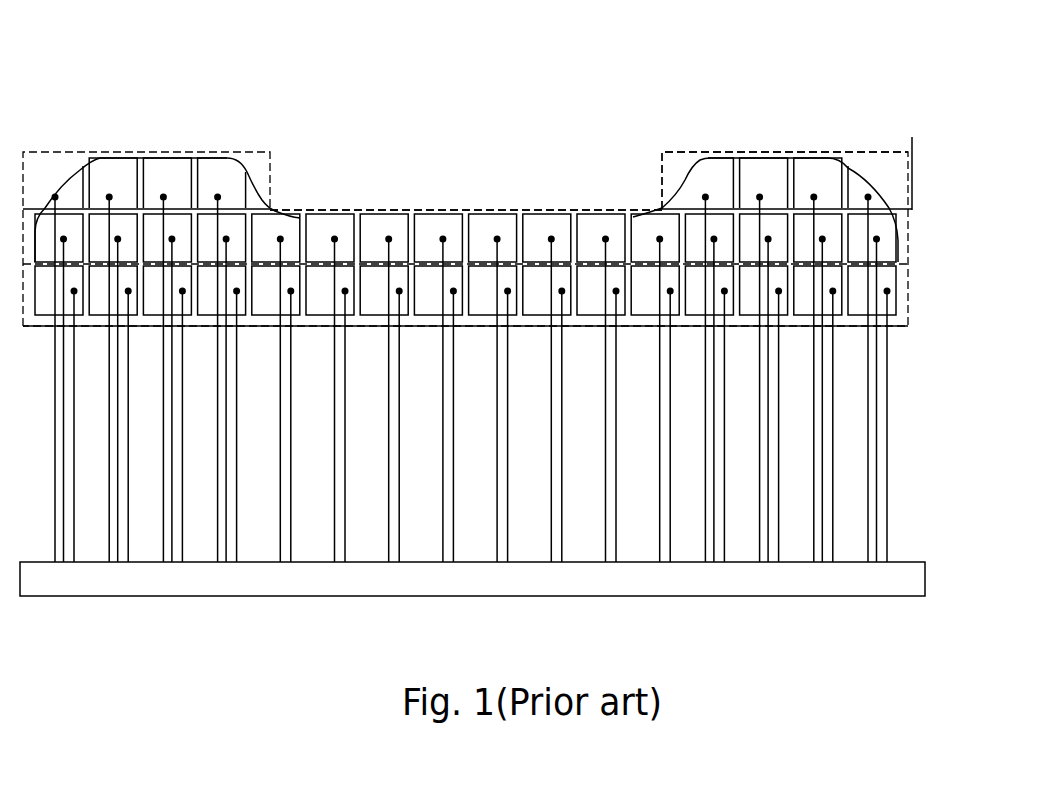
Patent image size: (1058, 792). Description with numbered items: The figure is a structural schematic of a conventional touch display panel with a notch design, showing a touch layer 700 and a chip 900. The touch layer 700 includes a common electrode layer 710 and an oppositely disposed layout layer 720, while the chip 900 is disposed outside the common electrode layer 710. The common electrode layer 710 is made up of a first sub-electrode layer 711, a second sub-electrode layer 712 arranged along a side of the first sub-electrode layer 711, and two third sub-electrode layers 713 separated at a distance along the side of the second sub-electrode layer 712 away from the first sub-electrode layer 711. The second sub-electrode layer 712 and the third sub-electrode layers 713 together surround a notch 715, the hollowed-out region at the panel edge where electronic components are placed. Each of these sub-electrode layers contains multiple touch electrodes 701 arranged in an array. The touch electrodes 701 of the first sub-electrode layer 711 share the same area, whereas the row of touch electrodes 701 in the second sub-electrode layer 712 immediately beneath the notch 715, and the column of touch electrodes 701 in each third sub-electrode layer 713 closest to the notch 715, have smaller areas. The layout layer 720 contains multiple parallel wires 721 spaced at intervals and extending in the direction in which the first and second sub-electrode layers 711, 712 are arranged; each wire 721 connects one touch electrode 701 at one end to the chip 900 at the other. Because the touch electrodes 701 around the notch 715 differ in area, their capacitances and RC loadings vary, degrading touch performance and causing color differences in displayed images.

The touch layer 700 is at (707, 65).
The touch electrodes 701 is at (167, 182).
The common electrode layer 710 is at (920, 103).
The first sub-electrode layer 711 is at (907, 155).
The second sub-electrode layer 712 is at (622, 208).
The third sub-electrode layers 713 is at (677, 152).
The notch 715 is at (345, 213).
The layout layer 720 is at (553, 363).
The wires 721 is at (218, 510).
The chip 900 is at (672, 595).